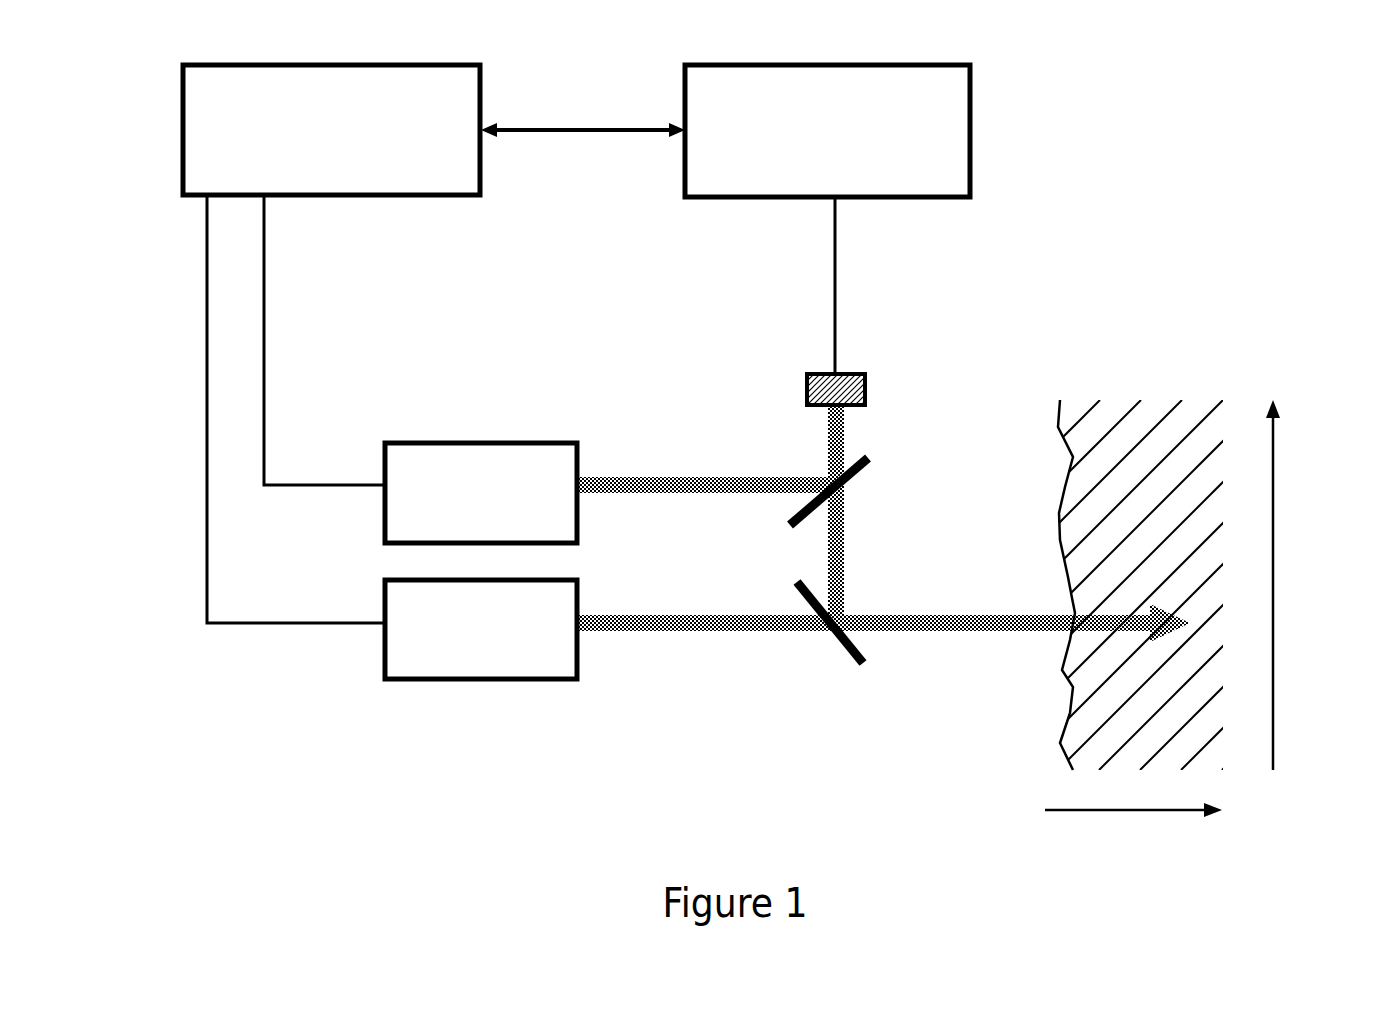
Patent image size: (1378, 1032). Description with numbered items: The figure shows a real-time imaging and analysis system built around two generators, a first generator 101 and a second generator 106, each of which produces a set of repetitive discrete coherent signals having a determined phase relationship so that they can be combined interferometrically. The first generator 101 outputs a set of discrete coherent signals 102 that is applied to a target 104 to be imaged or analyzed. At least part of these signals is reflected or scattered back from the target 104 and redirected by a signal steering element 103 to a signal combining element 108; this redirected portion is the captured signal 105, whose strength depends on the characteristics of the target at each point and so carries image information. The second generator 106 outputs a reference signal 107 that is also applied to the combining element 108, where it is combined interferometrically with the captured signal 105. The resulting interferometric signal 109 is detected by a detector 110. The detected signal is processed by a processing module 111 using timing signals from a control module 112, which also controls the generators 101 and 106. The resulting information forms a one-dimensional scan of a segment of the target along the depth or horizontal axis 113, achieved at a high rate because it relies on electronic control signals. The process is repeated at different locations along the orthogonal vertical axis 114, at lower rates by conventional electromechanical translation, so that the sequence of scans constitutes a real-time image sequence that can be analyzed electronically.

The first generator 101 is at (455, 686).
The set of discrete coherent signals 102 is at (720, 638).
The signal steering element 103 is at (850, 676).
The target 104 is at (1155, 384).
The captured signal 105 is at (850, 580).
The second generator 106 is at (455, 436).
The reference signal 107 is at (672, 476).
The signal combining element 108 is at (866, 483).
The interferometric signal 109 is at (818, 446).
The detector 110 is at (872, 377).
The processing module 111 is at (976, 97).
The control module 112 is at (486, 92).
The horizontal axis 113 is at (1140, 821).
The vertical axis 114 is at (1282, 495).